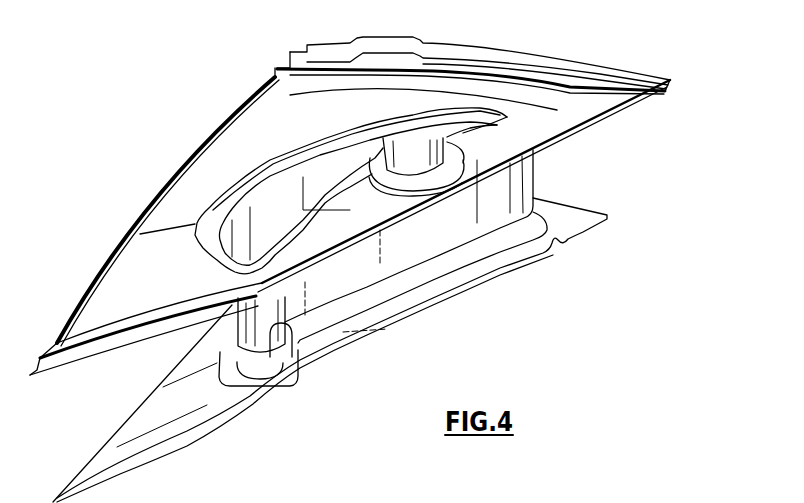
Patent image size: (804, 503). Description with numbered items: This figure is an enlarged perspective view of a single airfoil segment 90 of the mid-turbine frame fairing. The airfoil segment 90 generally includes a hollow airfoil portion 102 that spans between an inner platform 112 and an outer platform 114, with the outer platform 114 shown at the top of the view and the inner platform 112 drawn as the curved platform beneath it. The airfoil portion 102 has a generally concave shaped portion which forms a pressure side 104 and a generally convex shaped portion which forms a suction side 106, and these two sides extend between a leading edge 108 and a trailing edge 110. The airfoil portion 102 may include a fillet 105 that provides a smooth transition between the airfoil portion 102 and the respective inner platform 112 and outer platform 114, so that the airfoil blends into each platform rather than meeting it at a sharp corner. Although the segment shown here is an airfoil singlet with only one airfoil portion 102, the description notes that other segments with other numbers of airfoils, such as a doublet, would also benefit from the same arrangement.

The airfoil segment 90 is at (636, 169).
The outer platform 114 is at (263, 124).
The trailing edge 110 is at (534, 179).
The fillet 105 is at (460, 250).
The inner platform 112 is at (437, 297).
The pressure side 104 is at (343, 273).
The airfoil portion 102 is at (297, 350).
The leading edge 108 is at (227, 347).
The suction side 106 is at (238, 340).